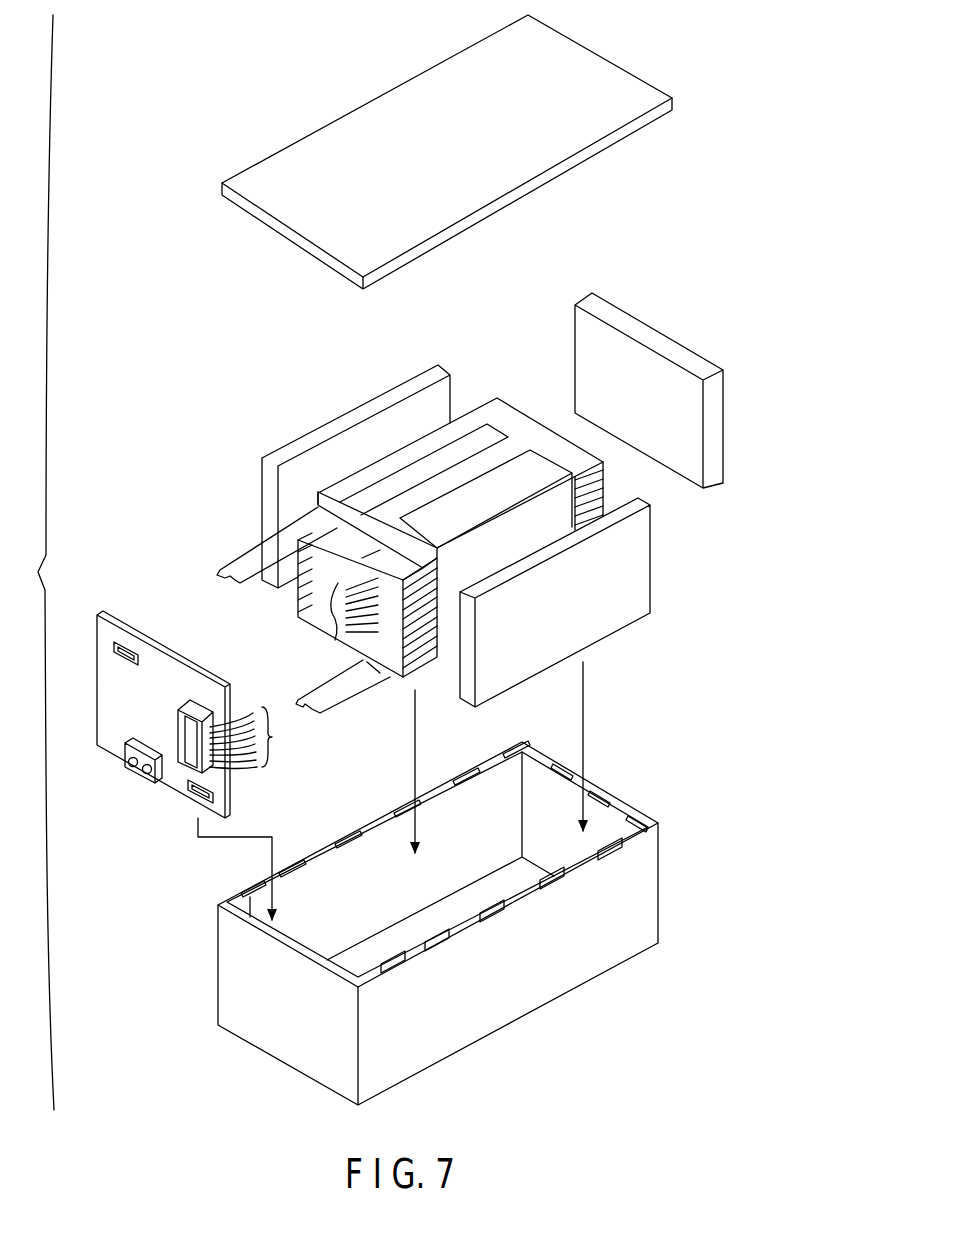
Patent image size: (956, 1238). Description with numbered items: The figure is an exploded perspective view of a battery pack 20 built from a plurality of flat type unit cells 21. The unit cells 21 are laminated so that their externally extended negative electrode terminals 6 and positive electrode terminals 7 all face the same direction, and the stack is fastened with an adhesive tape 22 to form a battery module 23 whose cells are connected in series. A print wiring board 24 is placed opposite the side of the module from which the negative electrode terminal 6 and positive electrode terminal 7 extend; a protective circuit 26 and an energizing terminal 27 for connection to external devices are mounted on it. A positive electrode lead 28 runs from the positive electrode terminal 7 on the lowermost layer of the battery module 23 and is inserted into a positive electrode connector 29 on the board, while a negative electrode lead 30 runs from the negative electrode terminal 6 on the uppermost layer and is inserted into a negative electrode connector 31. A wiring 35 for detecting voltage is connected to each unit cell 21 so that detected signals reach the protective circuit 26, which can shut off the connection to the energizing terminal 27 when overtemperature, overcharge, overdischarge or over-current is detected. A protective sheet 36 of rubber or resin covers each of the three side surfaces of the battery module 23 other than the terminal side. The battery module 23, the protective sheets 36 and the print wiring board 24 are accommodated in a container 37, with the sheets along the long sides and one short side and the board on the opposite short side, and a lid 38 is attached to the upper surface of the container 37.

The battery pack 20 is at (128, 170).
The lid 38 is at (618, 86).
The protective sheet 36 is at (325, 437).
The battery module 23 is at (396, 448).
The adhesive tape 22 is at (520, 477).
The unit cell 21 is at (605, 495).
The negative electrode terminal 6 is at (316, 510).
The positive electrode terminal 7 is at (365, 556).
The negative electrode lead 30 is at (230, 561).
The positive electrode lead 28 is at (330, 705).
The wiring for detecting voltage 35 is at (330, 620).
The print wiring board 24 is at (126, 618).
The negative electrode connector 31 is at (132, 650).
The protective circuit 26 is at (193, 700).
The energizing terminal 27 is at (148, 780).
The positive electrode connector 29 is at (215, 795).
The container 37 is at (648, 890).